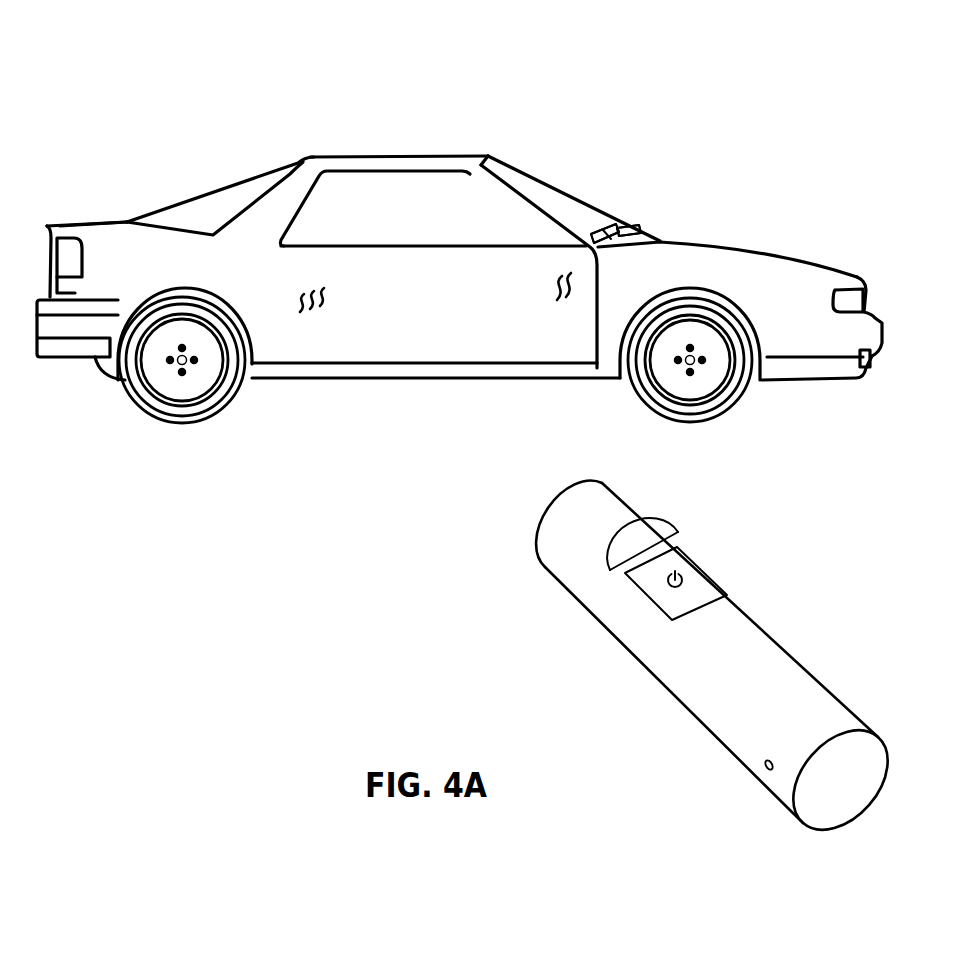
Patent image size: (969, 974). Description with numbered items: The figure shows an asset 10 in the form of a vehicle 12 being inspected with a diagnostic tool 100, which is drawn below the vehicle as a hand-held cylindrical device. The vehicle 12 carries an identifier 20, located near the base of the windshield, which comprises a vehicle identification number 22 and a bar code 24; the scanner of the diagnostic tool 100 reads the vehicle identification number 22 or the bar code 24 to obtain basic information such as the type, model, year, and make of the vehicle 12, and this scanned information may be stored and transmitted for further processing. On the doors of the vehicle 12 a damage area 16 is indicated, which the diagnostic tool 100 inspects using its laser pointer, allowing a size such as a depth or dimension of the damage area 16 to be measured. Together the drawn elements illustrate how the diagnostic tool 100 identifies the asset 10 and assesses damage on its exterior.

The asset 10 is at (423, 78).
The vehicle 12 is at (170, 247).
The damage area 16 is at (553, 290).
The identifier 20 is at (726, 188).
The vehicle identification number 22 is at (617, 227).
The bar code 24 is at (641, 229).
The diagnostic tool 100 is at (776, 583).